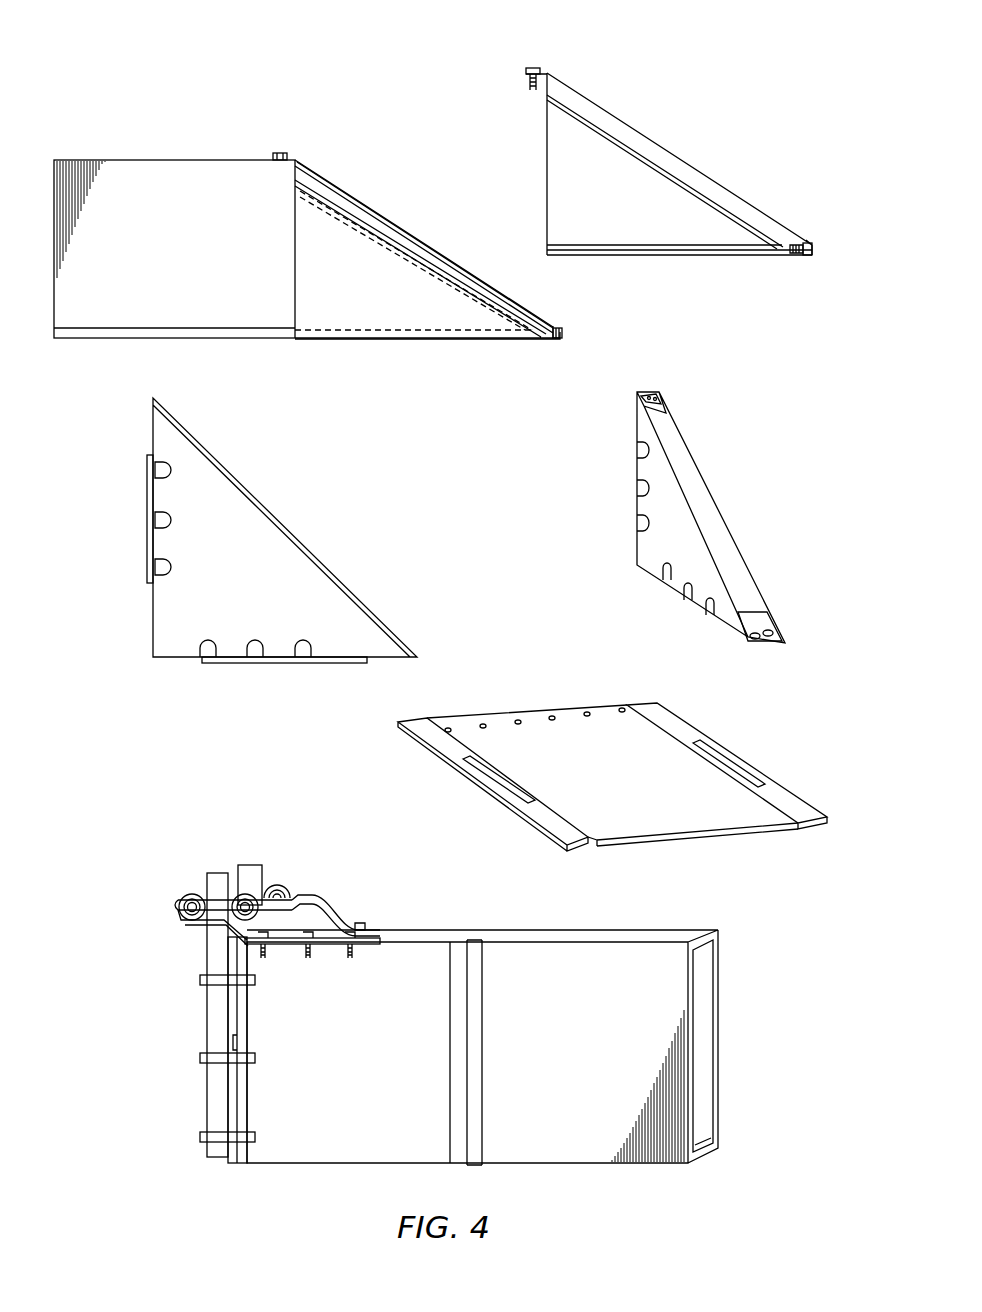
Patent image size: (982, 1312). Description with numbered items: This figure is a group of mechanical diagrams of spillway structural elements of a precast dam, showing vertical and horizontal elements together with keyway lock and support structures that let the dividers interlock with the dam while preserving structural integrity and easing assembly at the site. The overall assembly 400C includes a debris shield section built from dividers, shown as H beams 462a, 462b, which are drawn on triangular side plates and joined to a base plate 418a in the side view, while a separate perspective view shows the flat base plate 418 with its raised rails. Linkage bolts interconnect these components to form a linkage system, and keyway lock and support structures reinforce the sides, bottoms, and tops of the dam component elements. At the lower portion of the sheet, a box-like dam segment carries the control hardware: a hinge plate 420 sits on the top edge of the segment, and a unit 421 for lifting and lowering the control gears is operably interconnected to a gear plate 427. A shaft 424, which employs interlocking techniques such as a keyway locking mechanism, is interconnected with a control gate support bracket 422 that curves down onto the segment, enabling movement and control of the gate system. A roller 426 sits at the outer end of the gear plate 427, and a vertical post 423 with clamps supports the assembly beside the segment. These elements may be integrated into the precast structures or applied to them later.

The deployable assembly 400C is at (186, 58).
The divider 462a is at (410, 229).
The divider 462b is at (620, 119).
The base plate 418a is at (406, 344).
The base plate 418 is at (655, 826).
The hinge plate 420 is at (288, 935).
The unit for lifting and lowering the control gears 421 is at (282, 889).
The control gate support bracket 422 is at (305, 893).
The post 423 is at (207, 1008).
The shaft 424 is at (247, 894).
The roller 426 is at (182, 898).
The gear plate 427 is at (220, 903).